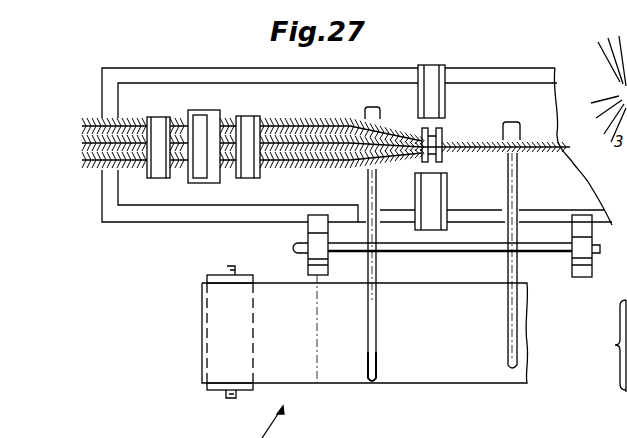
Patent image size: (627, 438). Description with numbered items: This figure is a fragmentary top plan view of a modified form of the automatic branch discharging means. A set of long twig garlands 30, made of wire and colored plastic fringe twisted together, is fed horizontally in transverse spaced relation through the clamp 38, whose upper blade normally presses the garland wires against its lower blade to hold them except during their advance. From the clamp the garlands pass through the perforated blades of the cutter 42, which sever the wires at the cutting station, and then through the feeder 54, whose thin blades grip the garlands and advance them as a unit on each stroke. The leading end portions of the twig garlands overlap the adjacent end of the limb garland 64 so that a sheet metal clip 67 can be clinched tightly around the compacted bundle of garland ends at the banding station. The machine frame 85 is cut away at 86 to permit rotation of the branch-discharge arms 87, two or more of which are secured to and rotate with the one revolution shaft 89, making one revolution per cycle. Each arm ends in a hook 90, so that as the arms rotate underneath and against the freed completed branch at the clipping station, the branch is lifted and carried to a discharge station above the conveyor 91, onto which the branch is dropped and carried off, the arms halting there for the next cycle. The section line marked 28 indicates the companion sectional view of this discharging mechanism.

The section line 28 is at (295, 103).
The twig garlands 30 is at (94, 171).
The clamp 38 is at (156, 118).
The cutter 42 is at (206, 113).
The feeder 54 is at (256, 116).
The limb garland 64 is at (580, 138).
The clip 67 is at (445, 140).
The machine frame 85 is at (200, 223).
The cut-away 86 is at (377, 187).
The branch-discharge arms 87 is at (377, 352).
The one revolution shaft 89 is at (442, 253).
The hook 90 is at (371, 382).
The conveyor 91 is at (455, 384).